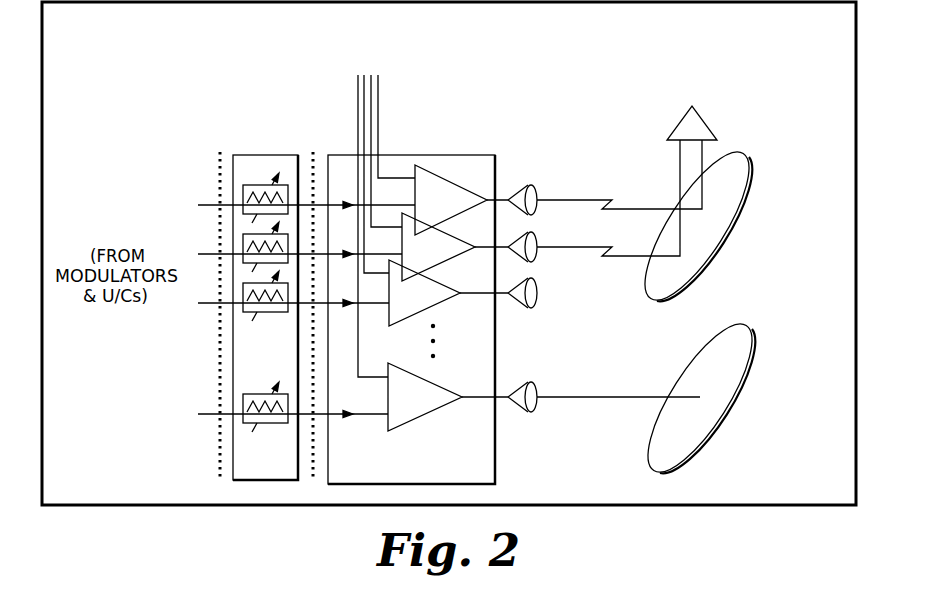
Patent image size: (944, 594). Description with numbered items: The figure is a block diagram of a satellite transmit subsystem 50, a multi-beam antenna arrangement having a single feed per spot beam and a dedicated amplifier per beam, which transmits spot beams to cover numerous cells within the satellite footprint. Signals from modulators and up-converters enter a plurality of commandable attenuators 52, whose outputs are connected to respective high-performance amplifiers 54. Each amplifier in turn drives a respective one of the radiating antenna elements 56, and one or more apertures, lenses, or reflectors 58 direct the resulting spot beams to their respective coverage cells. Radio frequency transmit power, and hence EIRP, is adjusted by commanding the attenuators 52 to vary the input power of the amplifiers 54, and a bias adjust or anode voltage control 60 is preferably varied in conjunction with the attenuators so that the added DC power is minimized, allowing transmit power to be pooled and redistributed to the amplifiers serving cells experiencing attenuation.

The satellite transmit subsystem 50 is at (662, 506).
The commandable attenuators 52 is at (227, 74).
The high-performance amplifiers (HPAs) 54 is at (472, 153).
The radiating antenna elements 56 is at (540, 168).
The apertures, lenses, or reflectors 58 is at (762, 202).
The anode voltage control 60 is at (378, 117).